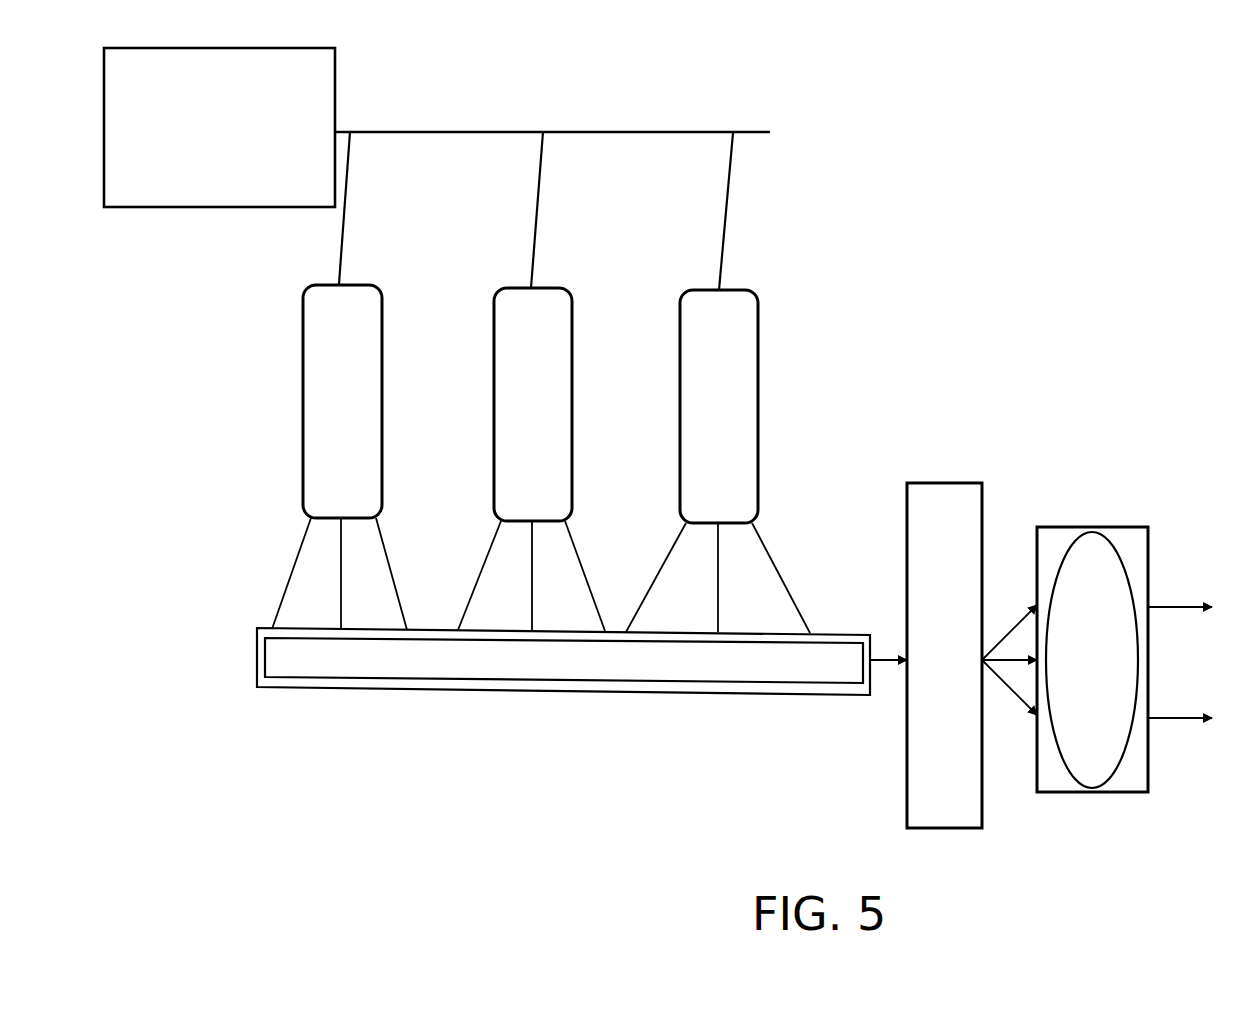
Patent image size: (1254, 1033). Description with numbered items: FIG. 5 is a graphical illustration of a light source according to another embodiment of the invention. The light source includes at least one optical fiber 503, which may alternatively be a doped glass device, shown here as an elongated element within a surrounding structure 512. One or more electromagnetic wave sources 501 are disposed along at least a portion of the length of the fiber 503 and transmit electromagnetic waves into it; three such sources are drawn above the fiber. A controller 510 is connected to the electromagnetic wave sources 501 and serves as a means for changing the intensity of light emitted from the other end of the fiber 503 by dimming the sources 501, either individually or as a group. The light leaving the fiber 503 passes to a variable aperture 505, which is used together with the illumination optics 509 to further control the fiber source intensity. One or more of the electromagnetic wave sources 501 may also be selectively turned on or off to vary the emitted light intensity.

The controller 510 is at (245, 157).
The electromagnetic wave sources 501 is at (341, 284).
The optical fiber 503 is at (594, 672).
The housing of light guide 512 is at (568, 694).
The variable aperture 505 is at (947, 483).
The illumination optics 509 is at (1115, 527).